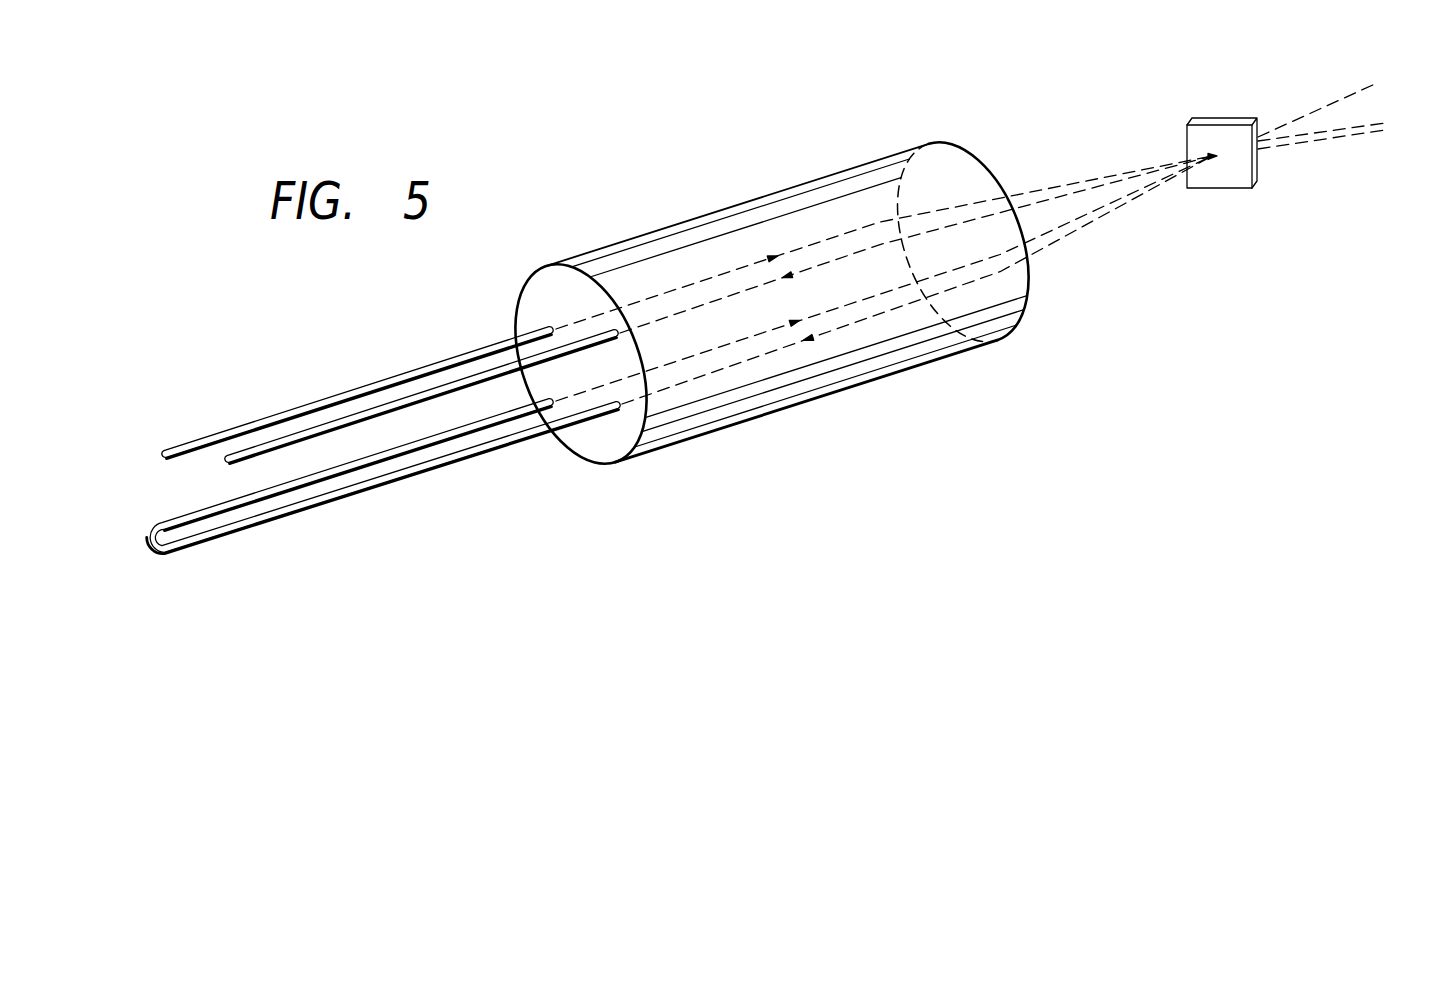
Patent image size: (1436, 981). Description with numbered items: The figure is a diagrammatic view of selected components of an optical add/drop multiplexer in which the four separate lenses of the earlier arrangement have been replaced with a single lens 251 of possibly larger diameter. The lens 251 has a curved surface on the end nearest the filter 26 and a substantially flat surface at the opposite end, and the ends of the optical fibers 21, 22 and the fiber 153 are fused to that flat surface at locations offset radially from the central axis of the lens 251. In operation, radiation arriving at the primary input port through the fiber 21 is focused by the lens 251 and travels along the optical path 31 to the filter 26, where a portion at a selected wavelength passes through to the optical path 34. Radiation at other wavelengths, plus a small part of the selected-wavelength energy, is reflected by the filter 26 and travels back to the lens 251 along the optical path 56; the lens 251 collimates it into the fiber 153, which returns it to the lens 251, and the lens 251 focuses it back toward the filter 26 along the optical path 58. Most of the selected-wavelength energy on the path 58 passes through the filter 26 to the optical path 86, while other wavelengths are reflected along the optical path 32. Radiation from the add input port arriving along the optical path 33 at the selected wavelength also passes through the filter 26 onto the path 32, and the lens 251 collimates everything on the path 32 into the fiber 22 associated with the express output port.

The lens 251 is at (745, 203).
The optical fiber 21 is at (357, 388).
The optical fiber 22 is at (235, 466).
The fiber 153 is at (392, 480).
The filter 26 is at (1222, 122).
The optical path 31 is at (1073, 183).
The optical path 32 is at (1120, 181).
The optical path 56 is at (1068, 238).
The optical path 58 is at (1130, 198).
The optical path 86 is at (1352, 94).
The optical path 33 is at (1367, 123).
The optical path 34 is at (1337, 137).